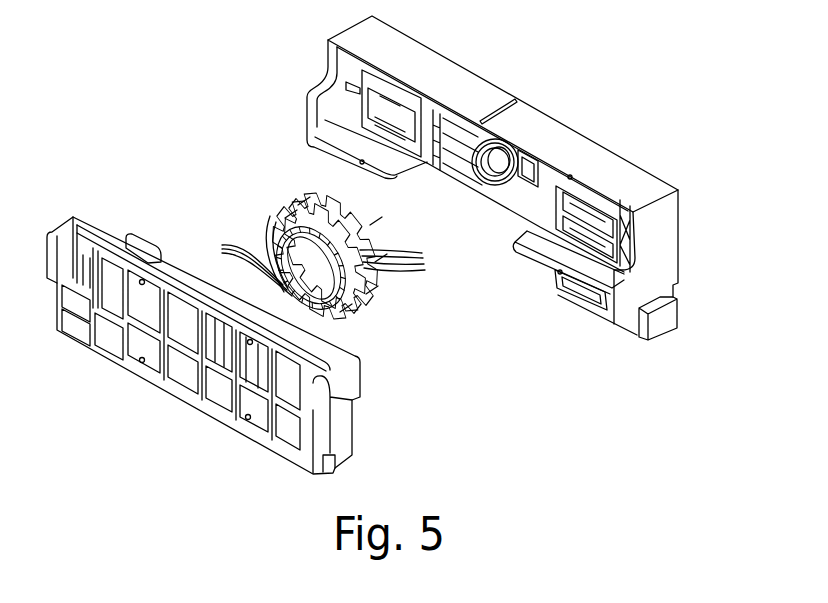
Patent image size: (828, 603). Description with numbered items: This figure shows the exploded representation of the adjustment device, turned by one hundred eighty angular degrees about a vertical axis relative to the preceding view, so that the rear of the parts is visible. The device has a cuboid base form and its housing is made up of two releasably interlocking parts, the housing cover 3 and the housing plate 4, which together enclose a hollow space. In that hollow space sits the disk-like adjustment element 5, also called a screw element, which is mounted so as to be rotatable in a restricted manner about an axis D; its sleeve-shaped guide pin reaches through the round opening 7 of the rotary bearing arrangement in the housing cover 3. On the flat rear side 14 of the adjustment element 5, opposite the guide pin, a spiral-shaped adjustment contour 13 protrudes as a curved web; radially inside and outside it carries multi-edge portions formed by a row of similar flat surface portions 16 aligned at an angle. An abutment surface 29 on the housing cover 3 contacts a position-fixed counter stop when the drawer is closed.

The housing cover 3 is at (587, 133).
The housing plate 4 is at (142, 380).
The adjustment element 5 is at (265, 212).
The round opening 7 is at (500, 138).
The adjustment contour 13 is at (261, 248).
The rear side 14 is at (292, 216).
The surface portions 16 is at (324, 266).
The abutment surface 29 is at (663, 320).